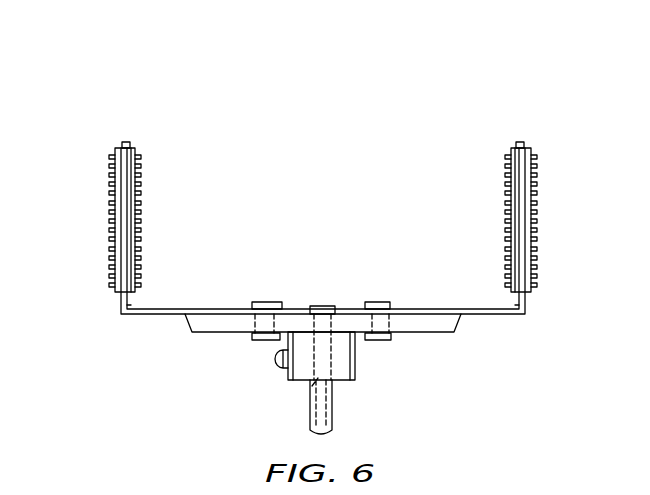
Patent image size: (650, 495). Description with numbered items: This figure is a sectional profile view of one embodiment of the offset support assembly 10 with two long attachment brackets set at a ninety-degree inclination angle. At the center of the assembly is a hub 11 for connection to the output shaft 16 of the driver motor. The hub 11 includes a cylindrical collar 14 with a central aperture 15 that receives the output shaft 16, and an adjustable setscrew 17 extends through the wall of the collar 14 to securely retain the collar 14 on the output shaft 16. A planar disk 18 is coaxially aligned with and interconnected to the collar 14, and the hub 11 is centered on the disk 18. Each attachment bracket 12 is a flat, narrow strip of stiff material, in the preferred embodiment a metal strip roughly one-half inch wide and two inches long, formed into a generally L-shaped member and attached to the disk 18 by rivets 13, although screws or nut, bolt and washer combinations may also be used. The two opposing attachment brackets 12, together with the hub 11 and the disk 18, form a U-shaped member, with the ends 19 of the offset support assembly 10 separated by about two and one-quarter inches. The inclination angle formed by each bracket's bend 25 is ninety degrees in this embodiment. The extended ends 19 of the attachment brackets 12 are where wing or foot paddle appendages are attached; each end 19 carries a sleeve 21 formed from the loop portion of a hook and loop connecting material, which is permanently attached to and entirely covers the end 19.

The offset support assembly 10 is at (246, 95).
The hub 11 is at (322, 306).
The attachment bracket 12 is at (134, 317).
The rivets 13 is at (266, 302).
The cylindrical collar 14 is at (356, 357).
The central aperture 15 is at (309, 388).
The output shaft 16 is at (334, 410).
The adjustable setscrew 17 is at (274, 359).
The planar disk 18 is at (444, 336).
The attachment bracket end 19 is at (123, 141).
The sleeve 21 is at (110, 218).
The bend 25 is at (128, 305).